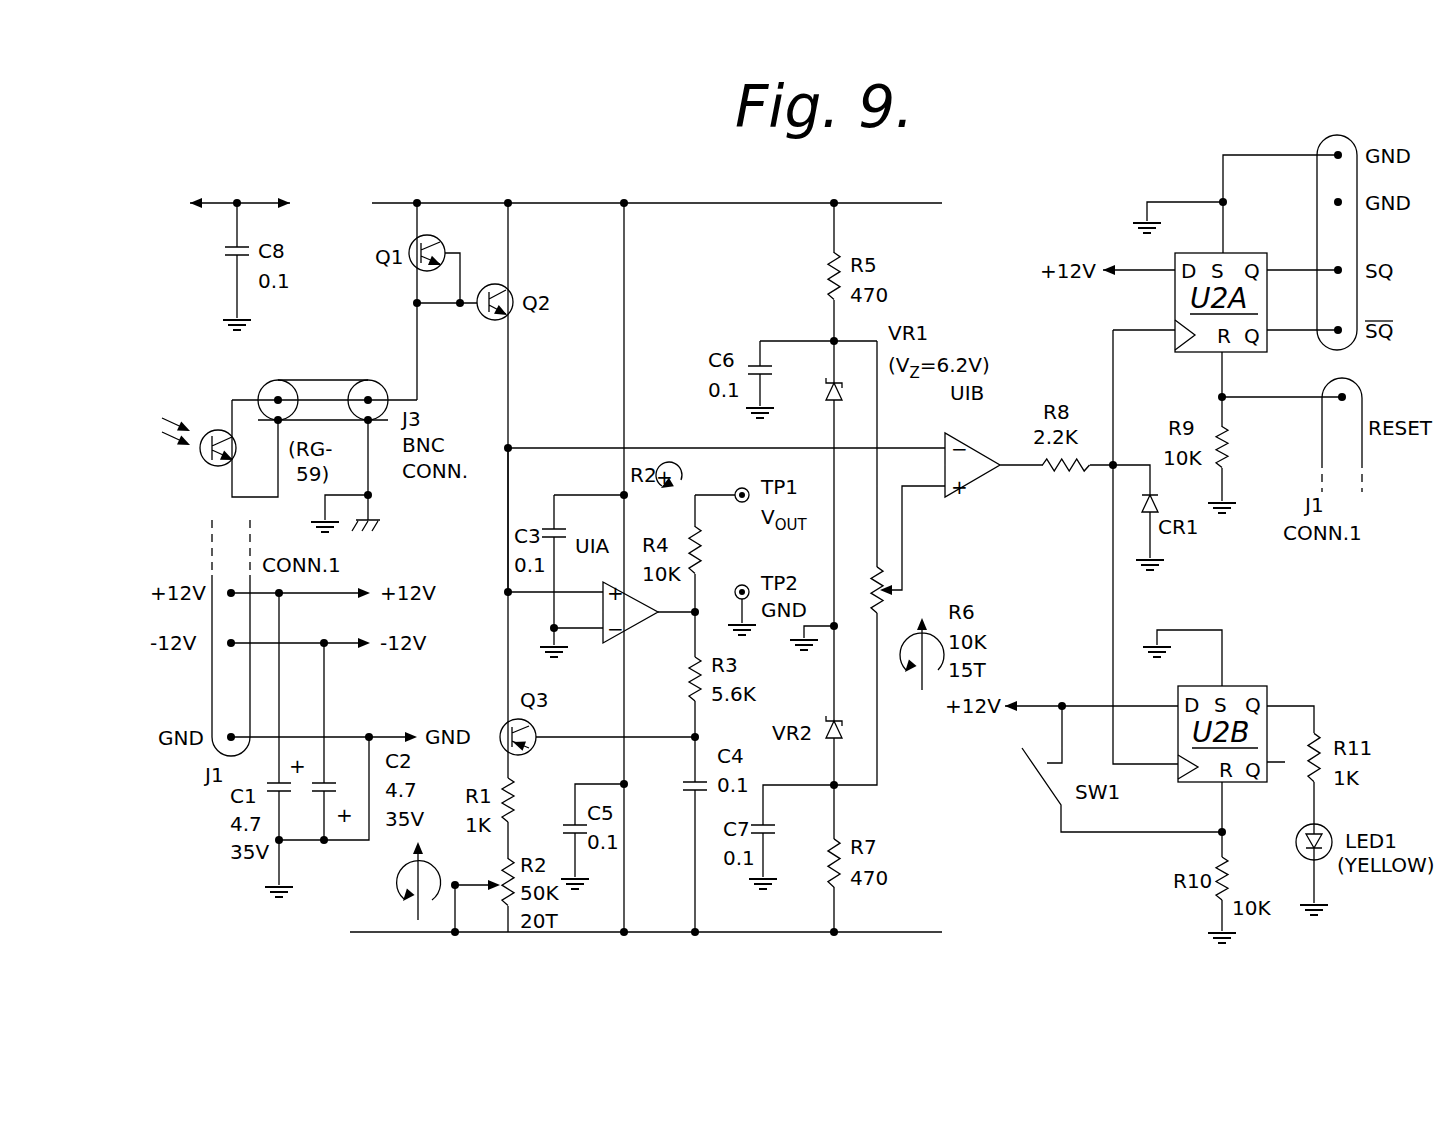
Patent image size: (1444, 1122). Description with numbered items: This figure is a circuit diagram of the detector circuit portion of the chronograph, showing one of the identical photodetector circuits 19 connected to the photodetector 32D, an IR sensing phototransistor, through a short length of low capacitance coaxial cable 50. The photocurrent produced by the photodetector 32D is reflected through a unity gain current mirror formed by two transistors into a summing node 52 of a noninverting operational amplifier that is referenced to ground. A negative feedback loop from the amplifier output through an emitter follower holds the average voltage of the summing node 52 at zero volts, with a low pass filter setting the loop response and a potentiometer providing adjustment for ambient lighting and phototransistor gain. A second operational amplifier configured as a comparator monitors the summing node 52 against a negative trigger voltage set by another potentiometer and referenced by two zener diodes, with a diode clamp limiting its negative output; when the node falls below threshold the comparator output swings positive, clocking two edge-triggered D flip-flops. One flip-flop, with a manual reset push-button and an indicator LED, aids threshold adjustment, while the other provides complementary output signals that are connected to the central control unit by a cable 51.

The photodetector circuit 19 is at (634, 177).
The coaxial cable 50 is at (323, 380).
The cable 51 is at (1320, 238).
The summing node 52 is at (505, 507).
The photodetector 32D is at (220, 470).